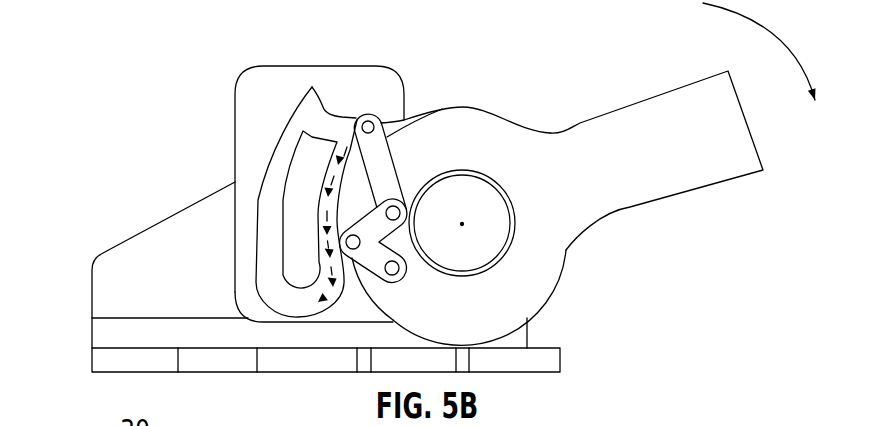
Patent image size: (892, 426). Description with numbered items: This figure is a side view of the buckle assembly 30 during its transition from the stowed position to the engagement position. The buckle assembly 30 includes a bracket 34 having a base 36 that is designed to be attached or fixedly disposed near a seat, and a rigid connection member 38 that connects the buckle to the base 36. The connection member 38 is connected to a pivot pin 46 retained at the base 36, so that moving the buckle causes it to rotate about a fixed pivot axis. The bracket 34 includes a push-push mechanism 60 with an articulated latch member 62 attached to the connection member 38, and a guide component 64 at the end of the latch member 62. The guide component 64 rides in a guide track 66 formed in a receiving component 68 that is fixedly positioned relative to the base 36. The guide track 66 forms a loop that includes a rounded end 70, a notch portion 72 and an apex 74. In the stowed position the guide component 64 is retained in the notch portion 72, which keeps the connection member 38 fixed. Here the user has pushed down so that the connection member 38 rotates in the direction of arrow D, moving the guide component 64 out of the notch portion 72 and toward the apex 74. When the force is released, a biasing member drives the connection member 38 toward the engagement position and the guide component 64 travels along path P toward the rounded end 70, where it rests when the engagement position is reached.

The buckle assembly 30 is at (436, 186).
The bracket 34 is at (312, 227).
The base 36 is at (358, 343).
The connection member 38 is at (656, 146).
The pivot pin 46 is at (482, 223).
The push-push mechanism 60 is at (295, 173).
The articulated latch member 62 is at (405, 155).
The guide component 64 is at (416, 104).
The guide track 66 is at (280, 164).
The receiving component 68 is at (244, 209).
The rounded end 70 is at (254, 277).
The notch portion 72 is at (345, 67).
The apex 74 is at (388, 79).
The path P is at (263, 227).
The arrow D (direction of rotation) D is at (770, 51).